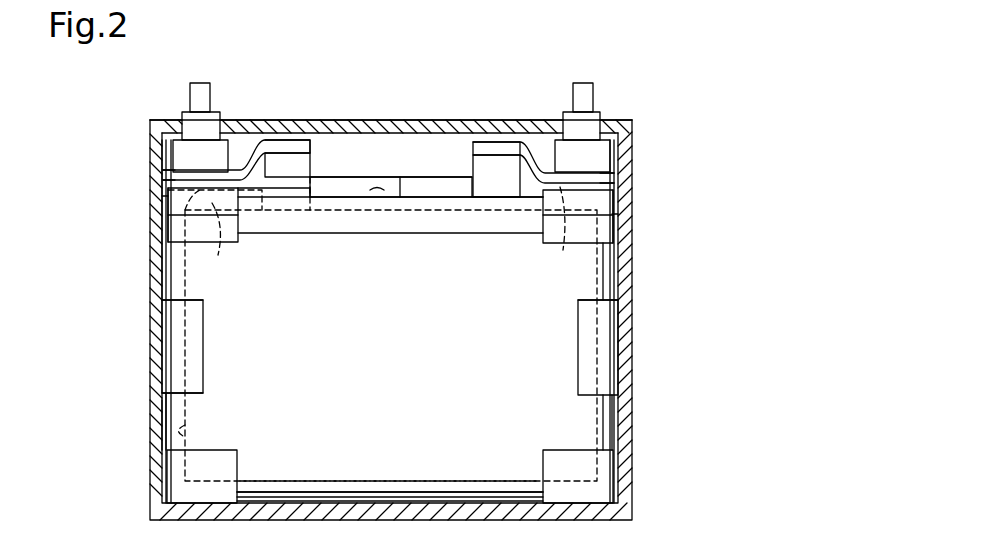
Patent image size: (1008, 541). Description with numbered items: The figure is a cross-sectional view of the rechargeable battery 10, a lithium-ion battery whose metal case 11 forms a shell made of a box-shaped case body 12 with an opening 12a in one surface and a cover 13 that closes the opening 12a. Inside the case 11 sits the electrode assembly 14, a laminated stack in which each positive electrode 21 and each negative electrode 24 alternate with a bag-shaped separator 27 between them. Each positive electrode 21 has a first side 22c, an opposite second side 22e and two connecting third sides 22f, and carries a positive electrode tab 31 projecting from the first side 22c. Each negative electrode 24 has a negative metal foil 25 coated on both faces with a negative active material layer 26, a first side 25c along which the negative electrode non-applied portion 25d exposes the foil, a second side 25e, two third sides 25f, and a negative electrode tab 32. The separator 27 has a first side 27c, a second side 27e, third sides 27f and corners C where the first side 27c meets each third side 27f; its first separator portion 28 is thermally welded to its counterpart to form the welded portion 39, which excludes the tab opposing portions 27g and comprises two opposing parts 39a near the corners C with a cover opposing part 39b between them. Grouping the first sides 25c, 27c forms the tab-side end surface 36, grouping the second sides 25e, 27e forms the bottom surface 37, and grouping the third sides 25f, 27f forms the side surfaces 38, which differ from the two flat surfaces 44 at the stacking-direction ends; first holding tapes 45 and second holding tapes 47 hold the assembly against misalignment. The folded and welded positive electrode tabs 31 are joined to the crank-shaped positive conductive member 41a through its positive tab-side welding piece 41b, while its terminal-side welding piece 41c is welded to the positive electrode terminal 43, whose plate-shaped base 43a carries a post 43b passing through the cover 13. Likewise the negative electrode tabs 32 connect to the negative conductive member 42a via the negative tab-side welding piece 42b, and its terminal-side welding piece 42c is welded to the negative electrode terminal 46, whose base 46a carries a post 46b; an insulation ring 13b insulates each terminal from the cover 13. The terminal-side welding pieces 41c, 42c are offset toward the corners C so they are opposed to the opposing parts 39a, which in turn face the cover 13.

The rechargeable battery 10 is at (695, 93).
The case 11 is at (690, 128).
The case body 12 is at (632, 150).
The opening 12a is at (163, 147).
The cover 13 is at (632, 128).
The insulation ring 13b is at (170, 120).
The electrode assembly 14 is at (160, 268).
The positive electrode 21 is at (613, 430).
The first side 22c is at (382, 329).
The second side 22e is at (284, 483).
The third sides 22f is at (187, 432).
The negative electrode 24 is at (402, 195).
The negative metal foil 25 is at (502, 225).
The first side 25c is at (380, 193).
The negative electrode non-applied portion 25d is at (352, 207).
The second side 25e is at (402, 500).
The third sides 25f is at (168, 388).
The negative active material layer 26 is at (603, 260).
The separator 27 is at (438, 175).
The first side 27c is at (320, 200).
The second side 27e is at (481, 505).
The third sides 27f is at (168, 312).
The tab opposing portions 27g is at (252, 198).
The first separator portion 28 is at (165, 432).
The positive electrode tab 31 is at (306, 163).
The negative electrode tab 32 is at (488, 160).
The tab-side end surface 36 is at (463, 199).
The bottom surface 37 is at (348, 505).
The side surfaces 38 is at (158, 413).
The welded portion 39 is at (170, 252).
The opposing parts 39a is at (170, 218).
The cover opposing part 39b is at (386, 176).
The positive conductive member 41a is at (229, 150).
The positive tab-side welding piece 41b is at (287, 140).
The terminal-side welding piece 41c is at (165, 173).
The negative conductive member 42a is at (524, 150).
The negative tab-side welding piece 42b is at (500, 142).
The terminal-side welding piece 42c is at (614, 172).
The positive electrode terminal 43 is at (198, 83).
The base 43a is at (219, 118).
The post 43b is at (190, 88).
The flat surfaces 44 is at (603, 407).
The first holding tapes 45 is at (170, 232).
The negative electrode terminal 46 is at (584, 83).
The base 46a is at (523, 160).
The post 46b is at (594, 90).
The second holding tapes 47 is at (175, 344).
The corners C is at (160, 198).